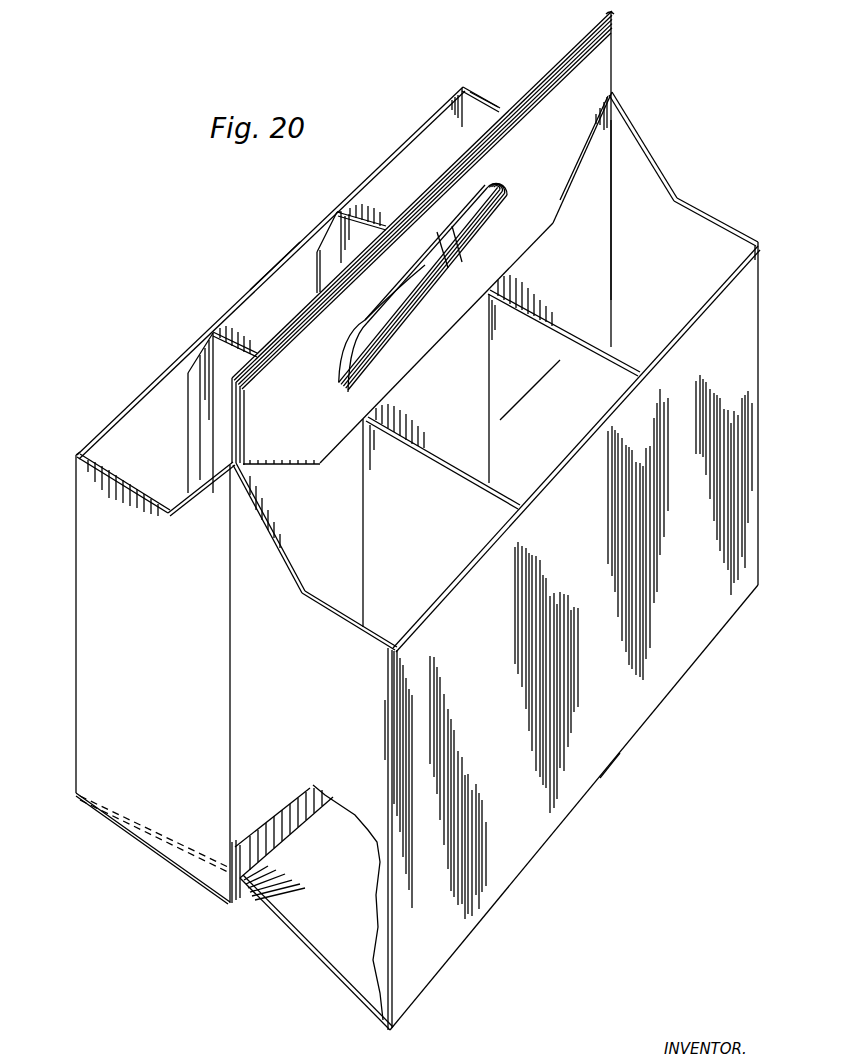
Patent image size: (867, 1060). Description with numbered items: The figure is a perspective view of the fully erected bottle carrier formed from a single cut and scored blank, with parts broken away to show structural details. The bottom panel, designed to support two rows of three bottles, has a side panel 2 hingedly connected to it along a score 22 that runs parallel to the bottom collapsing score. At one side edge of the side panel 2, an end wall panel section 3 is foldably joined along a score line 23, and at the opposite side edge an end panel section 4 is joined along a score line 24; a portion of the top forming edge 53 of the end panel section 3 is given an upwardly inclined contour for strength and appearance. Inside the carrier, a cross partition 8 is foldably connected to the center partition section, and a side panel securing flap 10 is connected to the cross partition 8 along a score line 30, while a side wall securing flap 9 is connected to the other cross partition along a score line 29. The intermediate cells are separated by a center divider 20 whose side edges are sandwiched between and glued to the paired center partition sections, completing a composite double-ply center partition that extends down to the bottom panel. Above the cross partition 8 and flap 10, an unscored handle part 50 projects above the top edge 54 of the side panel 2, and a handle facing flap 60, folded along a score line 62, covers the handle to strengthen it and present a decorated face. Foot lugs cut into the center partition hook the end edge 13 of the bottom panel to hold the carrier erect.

The side panel 2 is at (154, 408).
The end wall panel section 3 is at (156, 612).
The end panel section 4 is at (490, 104).
The cross partition 8 is at (360, 224).
The side wall securing flap 9 is at (198, 356).
The side panel securing flap 10 is at (330, 240).
The end edge 13 is at (158, 848).
The center divider 20 is at (466, 388).
The score 22 is at (76, 795).
The score line 23 is at (75, 455).
The score line 24 is at (468, 114).
The score line 29 is at (205, 332).
The score line 30 is at (338, 210).
The handle part 50 is at (236, 435).
The top forming edge 53 is at (204, 498).
The top edge 54 is at (303, 258).
The handle facing flap 60 is at (235, 413).
The score line 62 is at (606, 16).